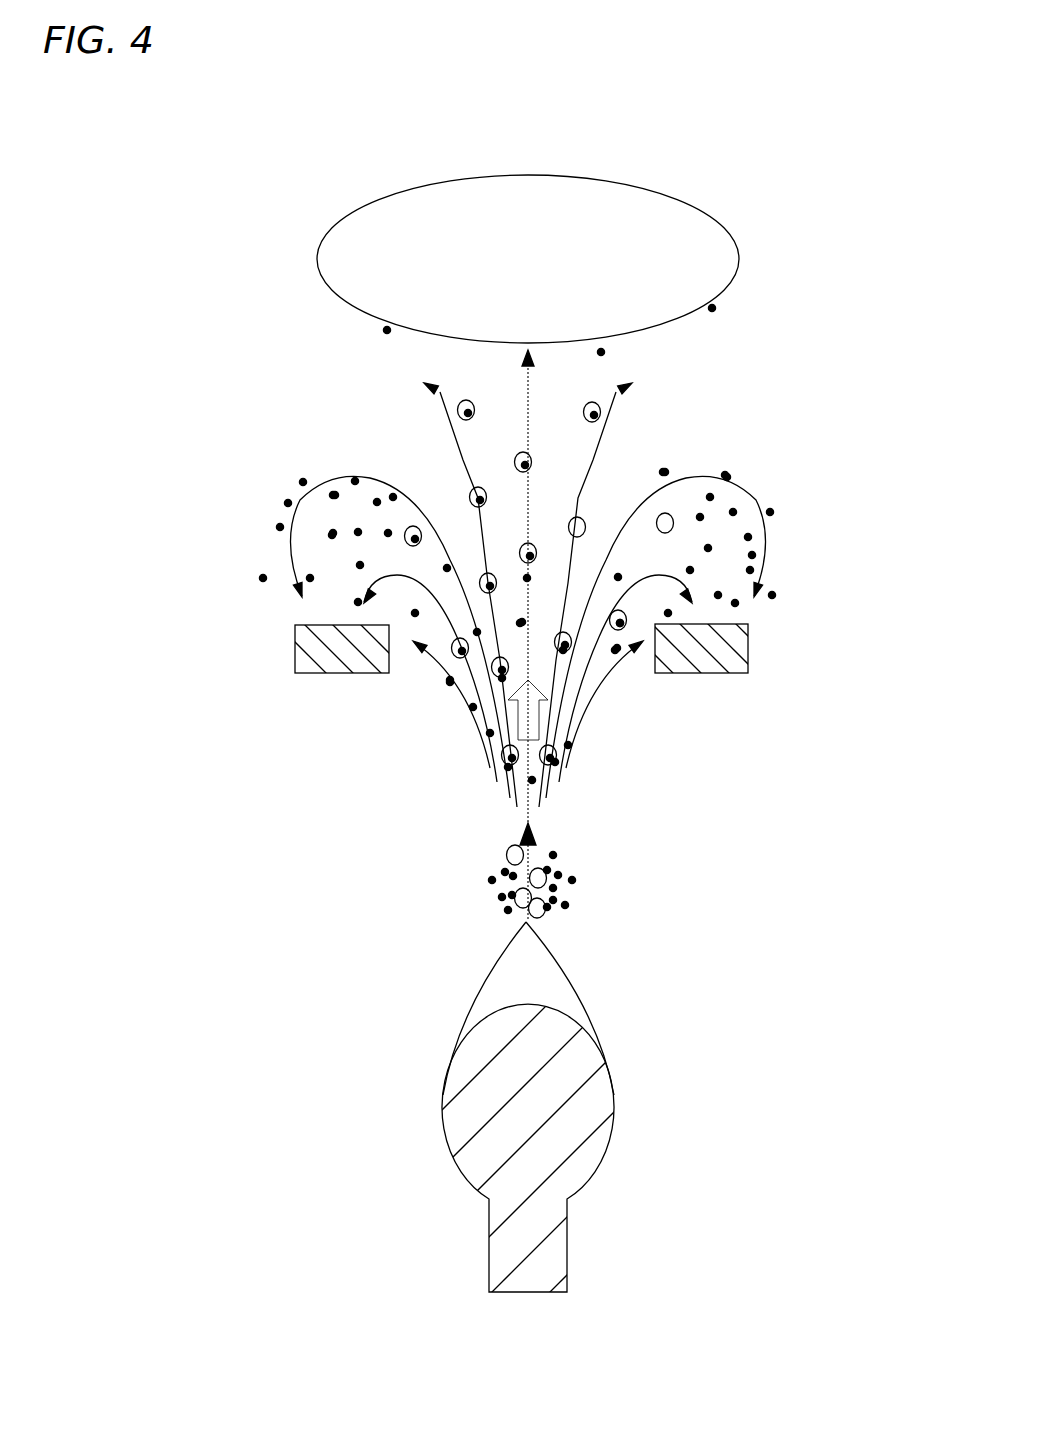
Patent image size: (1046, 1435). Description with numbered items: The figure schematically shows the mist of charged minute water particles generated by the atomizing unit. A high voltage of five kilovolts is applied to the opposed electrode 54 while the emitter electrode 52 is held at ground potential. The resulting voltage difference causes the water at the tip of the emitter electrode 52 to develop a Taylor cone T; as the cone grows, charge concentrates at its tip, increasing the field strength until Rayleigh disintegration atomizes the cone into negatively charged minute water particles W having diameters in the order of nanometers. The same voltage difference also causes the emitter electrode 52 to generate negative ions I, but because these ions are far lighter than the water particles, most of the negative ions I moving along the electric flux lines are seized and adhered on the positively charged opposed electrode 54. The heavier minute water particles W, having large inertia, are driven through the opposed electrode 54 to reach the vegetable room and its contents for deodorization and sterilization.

The negatively charged minute water particles W is at (470, 398).
The Taylor cone T is at (558, 968).
The negative ions I is at (668, 468).
The opposed electrode 54 is at (295, 667).
The emitter electrode 52 is at (585, 1137).